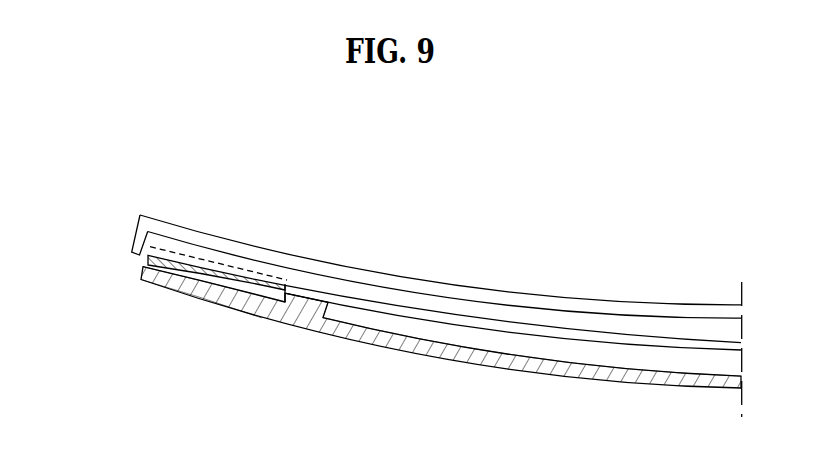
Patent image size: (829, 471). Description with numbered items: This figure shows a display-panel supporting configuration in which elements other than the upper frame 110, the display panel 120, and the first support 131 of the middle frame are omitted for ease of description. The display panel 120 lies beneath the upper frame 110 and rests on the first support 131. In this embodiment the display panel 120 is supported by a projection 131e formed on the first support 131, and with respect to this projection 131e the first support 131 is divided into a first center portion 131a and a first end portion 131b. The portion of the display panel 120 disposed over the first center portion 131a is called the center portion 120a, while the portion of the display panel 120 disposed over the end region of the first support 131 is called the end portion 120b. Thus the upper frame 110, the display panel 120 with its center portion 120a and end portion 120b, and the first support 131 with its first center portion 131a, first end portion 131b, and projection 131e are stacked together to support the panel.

The upper frame 110 is at (138, 240).
The display panel 120 is at (444, 238).
The center portion 120a is at (402, 312).
The end portion 120b is at (216, 235).
The first support 131 is at (441, 360).
The first center portion 131a is at (532, 360).
The first end portion 131b is at (188, 289).
The projection 131e is at (284, 297).